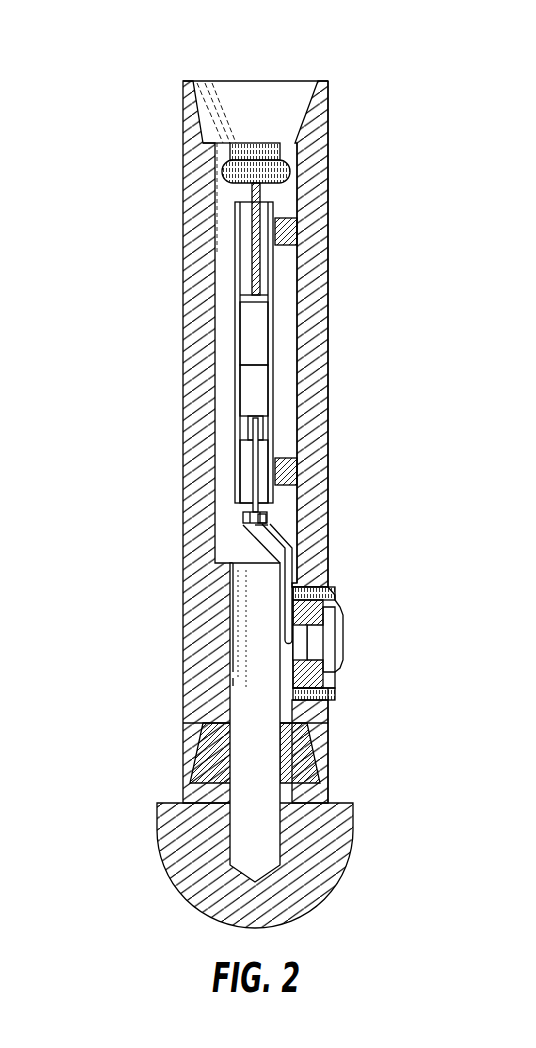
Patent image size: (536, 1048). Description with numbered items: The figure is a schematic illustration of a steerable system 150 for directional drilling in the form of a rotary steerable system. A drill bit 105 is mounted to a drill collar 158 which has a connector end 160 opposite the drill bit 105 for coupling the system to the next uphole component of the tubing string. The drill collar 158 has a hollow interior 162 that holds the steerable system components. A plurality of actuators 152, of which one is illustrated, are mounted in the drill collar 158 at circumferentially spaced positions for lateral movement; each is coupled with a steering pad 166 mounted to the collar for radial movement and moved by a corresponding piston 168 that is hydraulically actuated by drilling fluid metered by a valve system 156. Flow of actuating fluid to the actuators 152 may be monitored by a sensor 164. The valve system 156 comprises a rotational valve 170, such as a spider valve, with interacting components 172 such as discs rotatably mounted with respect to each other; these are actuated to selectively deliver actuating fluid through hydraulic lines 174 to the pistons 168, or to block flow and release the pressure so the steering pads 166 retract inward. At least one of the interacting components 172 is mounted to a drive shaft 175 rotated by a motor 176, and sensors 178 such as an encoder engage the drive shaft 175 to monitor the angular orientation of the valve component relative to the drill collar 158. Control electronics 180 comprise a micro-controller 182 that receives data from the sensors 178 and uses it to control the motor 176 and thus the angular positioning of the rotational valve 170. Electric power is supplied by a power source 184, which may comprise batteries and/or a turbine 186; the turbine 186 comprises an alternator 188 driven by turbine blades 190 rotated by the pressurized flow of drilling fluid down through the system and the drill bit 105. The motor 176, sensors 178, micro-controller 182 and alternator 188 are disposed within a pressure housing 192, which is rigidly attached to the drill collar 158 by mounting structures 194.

The steerable system 150 is at (110, 62).
The actuators 152 is at (365, 665).
The drill bit 105 is at (352, 820).
The valve system 156 is at (232, 530).
The drill collar 158 is at (313, 198).
The connector end 160 is at (328, 168).
The hollow interior 162 is at (285, 292).
The sensor 164 is at (262, 527).
The steering pads 166 is at (344, 638).
The piston 168 is at (316, 642).
The rotational valve 170 is at (270, 519).
The interacting components 172 is at (243, 517).
The hydraulic lines 174 is at (292, 548).
The drive shaft 175 is at (253, 488).
The motor 176 is at (240, 450).
The sensors 178 is at (248, 430).
The control electronics 180 is at (258, 333).
The micro-controller 182 is at (258, 390).
The power source 184 is at (280, 140).
The turbine 186 is at (227, 152).
The alternator 188 is at (248, 283).
The turbine blades 190 is at (222, 172).
The pressure housing 192 is at (237, 357).
The mounting structures 194 is at (287, 233).